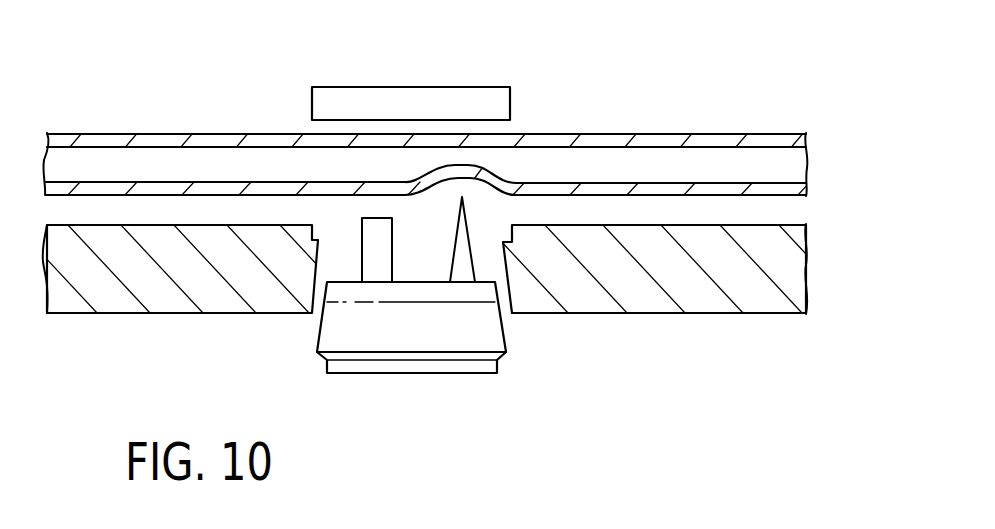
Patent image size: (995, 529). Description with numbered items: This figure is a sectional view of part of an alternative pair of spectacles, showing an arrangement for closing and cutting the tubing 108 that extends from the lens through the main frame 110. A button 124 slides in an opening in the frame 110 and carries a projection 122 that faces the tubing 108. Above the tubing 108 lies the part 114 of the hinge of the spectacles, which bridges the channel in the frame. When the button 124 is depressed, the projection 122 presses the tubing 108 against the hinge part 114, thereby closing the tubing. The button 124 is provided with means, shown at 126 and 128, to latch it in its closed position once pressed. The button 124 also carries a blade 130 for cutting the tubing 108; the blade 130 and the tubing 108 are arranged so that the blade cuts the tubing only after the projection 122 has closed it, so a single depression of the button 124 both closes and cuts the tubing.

The tubing 108 is at (694, 136).
The main frame 110 is at (698, 292).
The part of the hinge 114 is at (353, 100).
The projection 122 is at (373, 272).
The button 124 is at (429, 343).
The latching means 126 is at (332, 335).
The latching means 128 is at (318, 253).
The blade 130 is at (465, 272).